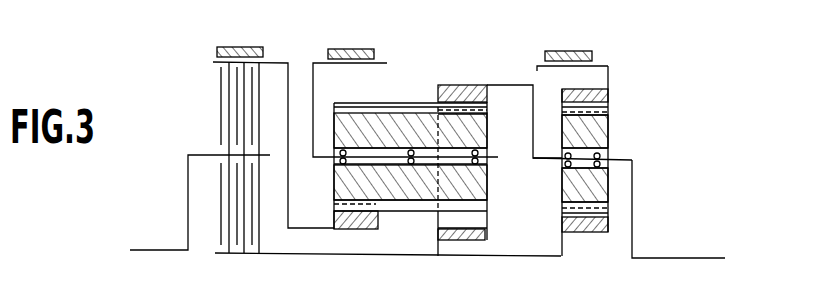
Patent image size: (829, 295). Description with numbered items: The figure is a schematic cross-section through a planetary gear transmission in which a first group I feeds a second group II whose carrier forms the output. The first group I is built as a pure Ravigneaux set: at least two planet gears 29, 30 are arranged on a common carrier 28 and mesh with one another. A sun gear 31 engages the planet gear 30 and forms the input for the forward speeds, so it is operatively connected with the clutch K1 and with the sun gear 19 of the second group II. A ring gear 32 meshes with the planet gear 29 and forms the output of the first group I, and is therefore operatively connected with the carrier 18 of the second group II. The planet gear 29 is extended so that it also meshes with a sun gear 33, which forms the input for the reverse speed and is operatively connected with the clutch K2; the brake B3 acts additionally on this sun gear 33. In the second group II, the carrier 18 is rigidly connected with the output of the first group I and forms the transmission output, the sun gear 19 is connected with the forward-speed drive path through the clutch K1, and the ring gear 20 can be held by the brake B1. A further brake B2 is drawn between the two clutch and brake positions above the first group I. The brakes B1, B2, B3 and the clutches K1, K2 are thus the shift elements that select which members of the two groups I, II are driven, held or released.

The carrier 18 is at (633, 212).
The sun gear 19 is at (584, 232).
The ring gear 20 is at (610, 94).
The carrier 28 is at (314, 88).
The planet gear 29 is at (408, 200).
The planet gear 30 is at (478, 218).
The sun gear 31 is at (458, 242).
The ring gear 32 is at (468, 90).
The sun gear 33 is at (348, 230).
The brake B1 is at (582, 52).
The brake B2 is at (362, 50).
The brake B3 is at (252, 47).
The clutch K1 is at (237, 205).
The clutch K2 is at (242, 97).
The first group I is at (420, 84).
The second group II is at (647, 128).